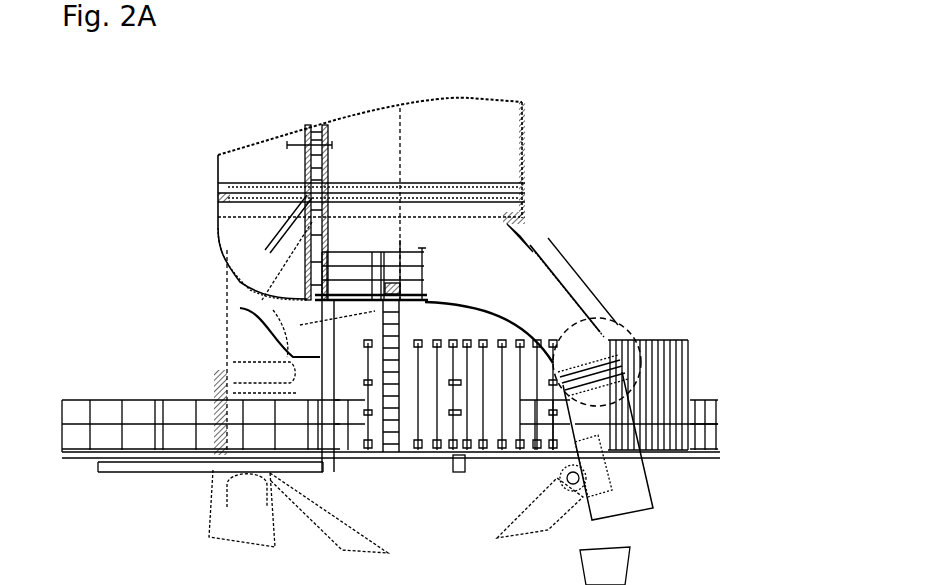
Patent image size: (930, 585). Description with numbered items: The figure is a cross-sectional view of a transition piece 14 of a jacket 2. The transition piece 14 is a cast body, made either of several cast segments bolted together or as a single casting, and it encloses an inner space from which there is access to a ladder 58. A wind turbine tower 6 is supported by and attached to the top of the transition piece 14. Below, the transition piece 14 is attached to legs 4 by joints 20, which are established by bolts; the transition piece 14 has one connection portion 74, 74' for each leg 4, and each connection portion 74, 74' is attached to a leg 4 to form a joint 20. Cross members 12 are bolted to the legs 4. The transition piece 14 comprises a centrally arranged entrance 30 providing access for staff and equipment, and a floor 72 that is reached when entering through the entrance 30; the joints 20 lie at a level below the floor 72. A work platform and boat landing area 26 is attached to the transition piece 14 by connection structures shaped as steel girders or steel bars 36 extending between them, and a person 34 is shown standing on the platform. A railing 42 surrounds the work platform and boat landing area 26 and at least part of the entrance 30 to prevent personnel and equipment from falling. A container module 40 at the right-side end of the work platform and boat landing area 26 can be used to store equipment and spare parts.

The jacket 2 is at (660, 229).
The legs 4 is at (210, 522).
The wind turbine tower 6 is at (527, 157).
The cross members 12 is at (518, 518).
The transition piece 14 is at (558, 275).
The joints 20 is at (627, 327).
The work platform and boat landing area 26 is at (115, 472).
The entrance 30 is at (345, 313).
The person 34 is at (217, 377).
The steel girders or steel bars 36 is at (240, 308).
The container module 40 is at (690, 375).
The railing 42 is at (106, 400).
The ladder 58 is at (327, 165).
The floor 72 is at (295, 296).
The connection portion 74 is at (606, 317).
The connection portion 74' is at (223, 350).